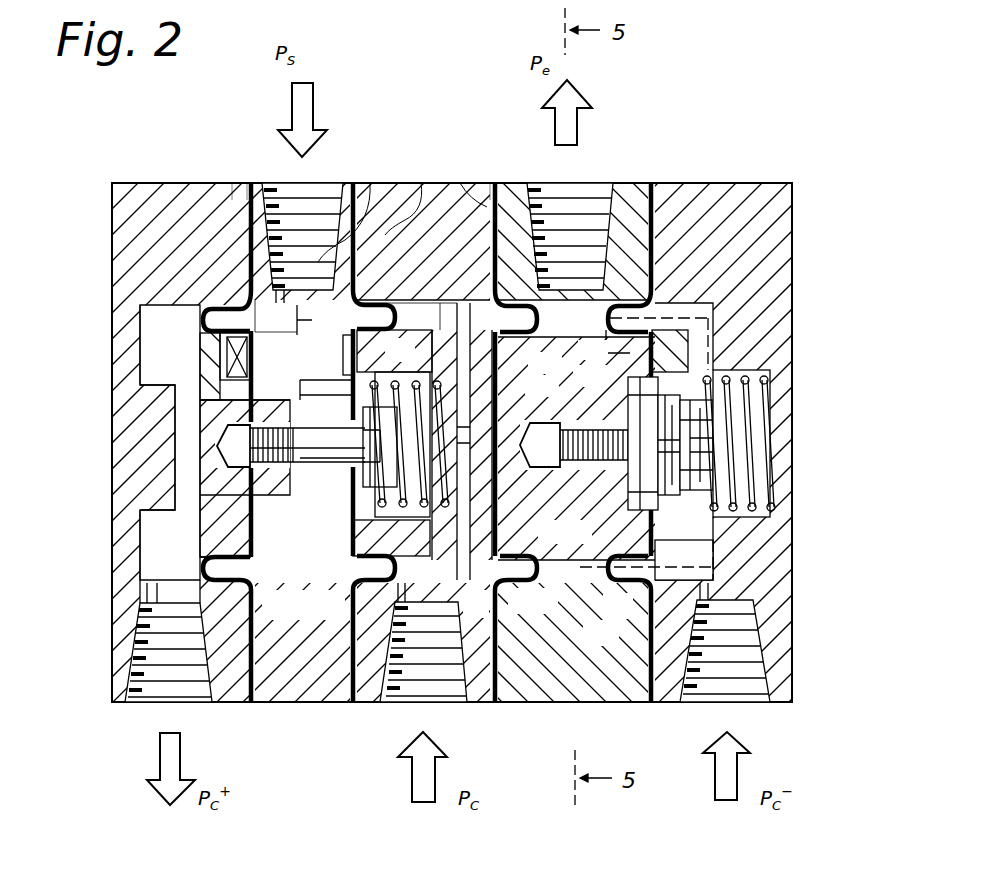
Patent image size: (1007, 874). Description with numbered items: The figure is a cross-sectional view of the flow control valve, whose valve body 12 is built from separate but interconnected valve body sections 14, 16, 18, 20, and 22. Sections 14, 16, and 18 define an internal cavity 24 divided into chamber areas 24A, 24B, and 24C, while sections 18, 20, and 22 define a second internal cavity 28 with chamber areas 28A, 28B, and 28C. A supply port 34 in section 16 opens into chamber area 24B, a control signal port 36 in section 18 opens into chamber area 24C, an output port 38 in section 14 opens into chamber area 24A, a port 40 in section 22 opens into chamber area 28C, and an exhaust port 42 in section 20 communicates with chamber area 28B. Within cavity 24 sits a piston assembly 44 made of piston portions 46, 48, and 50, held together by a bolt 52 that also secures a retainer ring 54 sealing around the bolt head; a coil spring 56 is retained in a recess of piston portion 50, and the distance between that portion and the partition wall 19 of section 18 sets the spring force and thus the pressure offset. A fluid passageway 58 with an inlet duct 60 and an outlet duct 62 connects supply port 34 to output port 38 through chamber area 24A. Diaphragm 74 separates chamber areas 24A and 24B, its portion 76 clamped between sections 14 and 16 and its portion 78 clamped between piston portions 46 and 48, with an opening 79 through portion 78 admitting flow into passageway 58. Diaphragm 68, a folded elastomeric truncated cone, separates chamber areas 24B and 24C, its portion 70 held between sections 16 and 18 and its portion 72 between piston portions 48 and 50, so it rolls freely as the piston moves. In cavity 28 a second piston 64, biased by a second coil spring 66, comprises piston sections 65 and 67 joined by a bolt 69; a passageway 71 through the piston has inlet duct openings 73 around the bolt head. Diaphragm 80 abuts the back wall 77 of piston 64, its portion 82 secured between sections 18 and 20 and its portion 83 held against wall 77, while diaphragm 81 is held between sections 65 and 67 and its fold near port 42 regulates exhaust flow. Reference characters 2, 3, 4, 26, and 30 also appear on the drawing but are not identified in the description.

The valve assembly 2 is at (277, 703).
The body section 3 is at (404, 182).
The body section 4 is at (690, 182).
The valve body 12 is at (125, 182).
The valve body section 14 is at (139, 182).
The valve body section 16 is at (328, 182).
The valve body section 18 is at (383, 182).
The partition wall 19 is at (445, 348).
The valve body section 20 is at (350, 182).
The valve body section 22 is at (730, 182).
The internal cavity 24 is at (187, 438).
The chamber area 24A is at (137, 322).
The chamber area 24B is at (292, 331).
The chamber area 24C is at (440, 330).
The passage 26 is at (478, 575).
The internal cavity 28 is at (700, 342).
The chamber area 28A is at (527, 557).
The chamber area 28B is at (537, 575).
The chamber area 28C is at (700, 540).
The connecting rod 30 is at (470, 455).
The supply port 34 is at (287, 182).
The control signal pressure port 36 is at (430, 688).
The output pressure port 38 is at (165, 690).
The input pressure port 40 is at (730, 683).
The exhaust port 42 is at (565, 182).
The piston assembly 44 is at (270, 575).
The piston portion 46 is at (207, 517).
The piston portion 48 is at (313, 572).
The piston portion 50 is at (408, 557).
The bolt 52 is at (340, 444).
The retainer ring 54 is at (362, 385).
The coil spring 56 is at (445, 505).
The fluid passageway 58 is at (227, 393).
The inlet duct 60 is at (300, 332).
The outlet duct 62 is at (208, 344).
The second piston 64 is at (585, 585).
The piston section 65 is at (600, 568).
The second coil spring 66 is at (737, 477).
The piston section 67 is at (680, 355).
The diaphragm 68 is at (370, 182).
The bolt 69 is at (703, 427).
The diaphragm portion 70 is at (421, 182).
The passageway 71 is at (625, 356).
The diaphragm portion 72 is at (345, 352).
The inlet duct openings 73 is at (662, 392).
The diaphragm 74 is at (247, 182).
The diaphragm portion 76 is at (232, 182).
The back wall 77 is at (485, 367).
The diaphragm portion 78 is at (236, 362).
The opening 79 is at (332, 396).
The diaphragm 80 is at (490, 182).
The diaphragm 81 is at (650, 182).
The diaphragm portion 82 is at (460, 182).
The diaphragm portion 83 is at (500, 385).